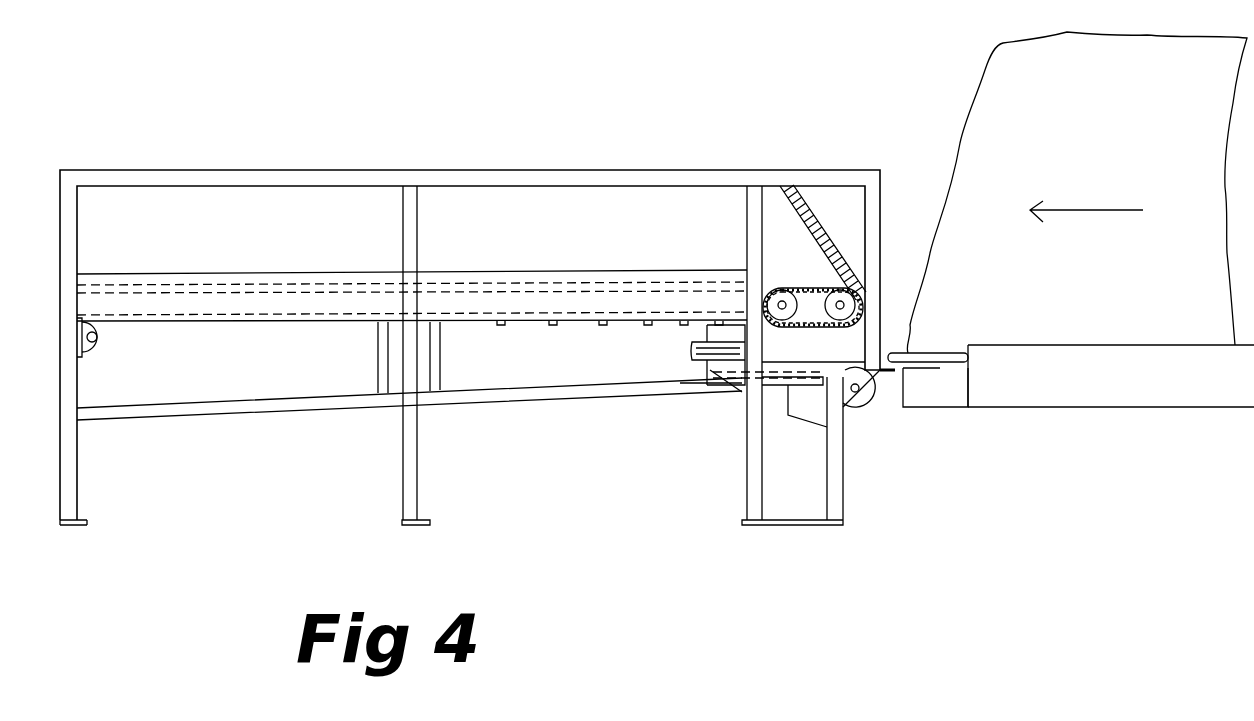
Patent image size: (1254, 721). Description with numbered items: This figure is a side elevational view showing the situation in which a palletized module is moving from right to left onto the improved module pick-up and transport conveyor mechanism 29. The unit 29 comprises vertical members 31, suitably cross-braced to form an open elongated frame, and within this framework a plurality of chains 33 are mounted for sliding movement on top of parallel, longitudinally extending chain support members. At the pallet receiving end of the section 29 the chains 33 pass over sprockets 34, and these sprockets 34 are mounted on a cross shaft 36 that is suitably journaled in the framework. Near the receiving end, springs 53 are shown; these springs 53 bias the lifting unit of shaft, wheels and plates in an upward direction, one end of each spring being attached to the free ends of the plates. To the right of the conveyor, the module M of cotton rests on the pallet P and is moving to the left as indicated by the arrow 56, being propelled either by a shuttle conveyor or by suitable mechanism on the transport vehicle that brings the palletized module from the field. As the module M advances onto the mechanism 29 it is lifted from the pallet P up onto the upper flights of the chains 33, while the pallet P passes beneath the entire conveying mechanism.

The module pick-up and transport conveyor mechanism 29 is at (410, 166).
The vertical members 31 is at (407, 462).
The chains 33 is at (625, 325).
The sprockets 34 is at (812, 312).
The cross shaft 36 is at (806, 262).
The springs 53 is at (825, 240).
The arrow 56 is at (1072, 210).
The module M is at (1108, 125).
The pallet P is at (925, 355).